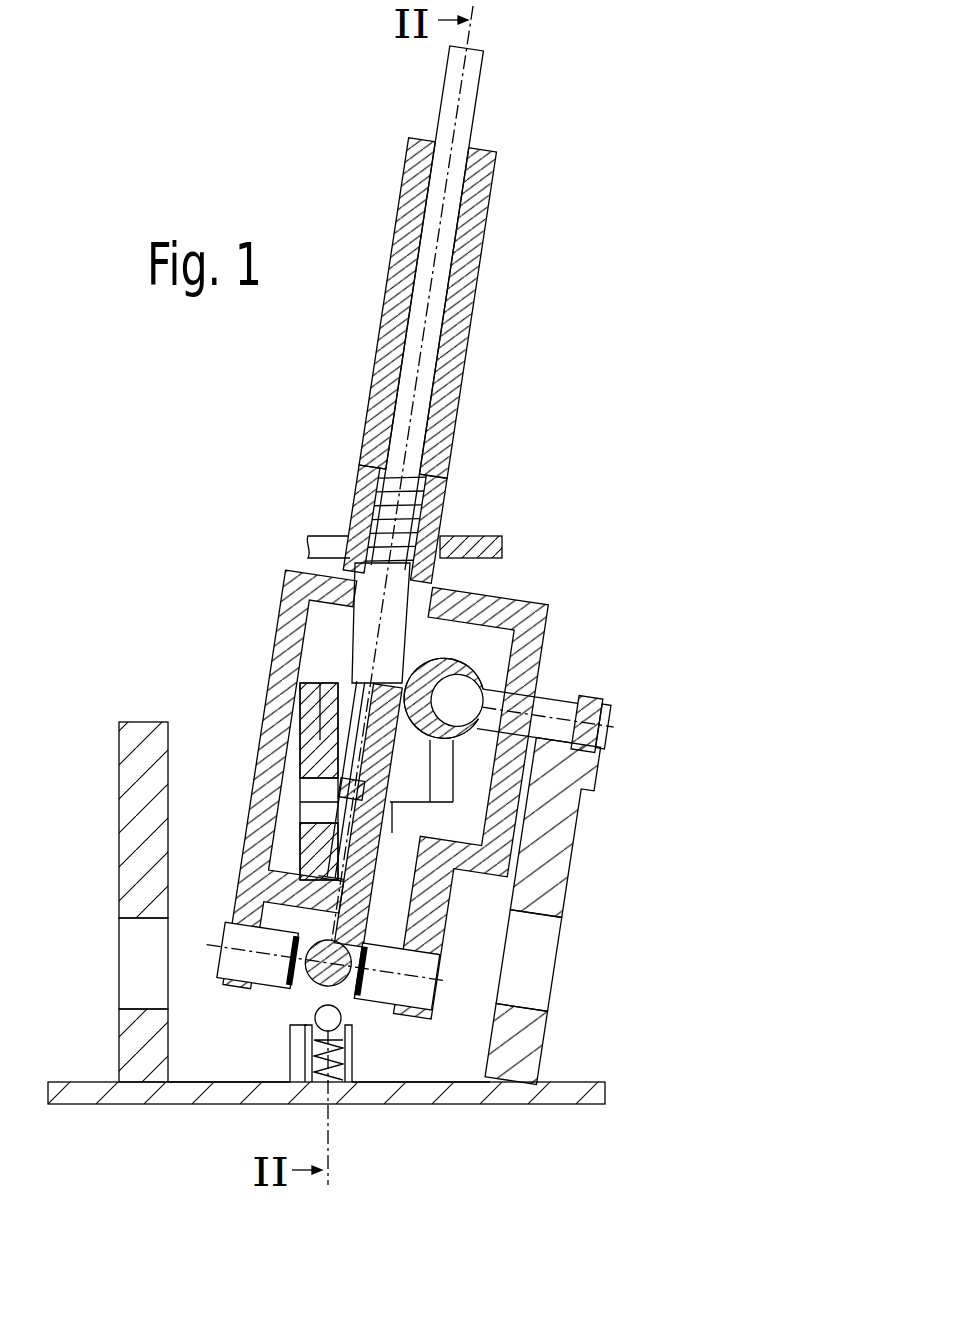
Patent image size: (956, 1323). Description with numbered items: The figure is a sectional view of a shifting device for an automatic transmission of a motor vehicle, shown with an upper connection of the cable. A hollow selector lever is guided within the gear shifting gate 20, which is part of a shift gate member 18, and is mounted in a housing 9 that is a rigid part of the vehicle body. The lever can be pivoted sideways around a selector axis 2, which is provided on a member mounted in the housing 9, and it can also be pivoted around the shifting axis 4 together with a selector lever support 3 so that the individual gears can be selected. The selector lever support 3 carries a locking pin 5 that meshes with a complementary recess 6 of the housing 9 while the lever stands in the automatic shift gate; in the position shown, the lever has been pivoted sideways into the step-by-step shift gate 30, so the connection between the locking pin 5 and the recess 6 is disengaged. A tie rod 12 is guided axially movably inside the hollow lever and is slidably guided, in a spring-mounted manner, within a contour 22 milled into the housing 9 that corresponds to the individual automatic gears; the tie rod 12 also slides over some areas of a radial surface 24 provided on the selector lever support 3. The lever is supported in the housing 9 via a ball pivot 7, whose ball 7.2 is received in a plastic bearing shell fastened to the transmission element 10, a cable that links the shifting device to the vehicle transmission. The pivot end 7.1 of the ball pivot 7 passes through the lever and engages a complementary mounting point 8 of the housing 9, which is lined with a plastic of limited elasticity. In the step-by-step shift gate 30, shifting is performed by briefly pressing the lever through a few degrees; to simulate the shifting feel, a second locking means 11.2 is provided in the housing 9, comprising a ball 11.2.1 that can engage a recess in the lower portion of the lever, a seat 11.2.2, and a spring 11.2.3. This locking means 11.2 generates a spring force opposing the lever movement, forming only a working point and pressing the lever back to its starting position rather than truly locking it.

The selector axis 2 is at (270, 1002).
The selector lever support 3 is at (357, 897).
The shifting axis 4 is at (440, 962).
The locking pin 5 is at (350, 785).
The recess 6 is at (310, 790).
The ball pivot 7 is at (597, 688).
The pivot end 7.1 is at (602, 738).
The ball 7.2 is at (470, 665).
The mounting point 8 is at (610, 715).
The housing 9 is at (578, 830).
The transmission element 10 is at (528, 814).
The second locking means 11.2 is at (354, 1029).
The ball 11.2.1 is at (313, 1015).
The seat 11.2.2 is at (350, 1090).
The spring 11.2.3 is at (325, 1092).
The tie rod 12 is at (470, 80).
The shift gate member 18 is at (497, 540).
The gear shifting gate 20 is at (345, 548).
The contour 22 is at (285, 672).
The radial surface 24 is at (432, 652).
The step-by-step shift gate 30 is at (455, 535).